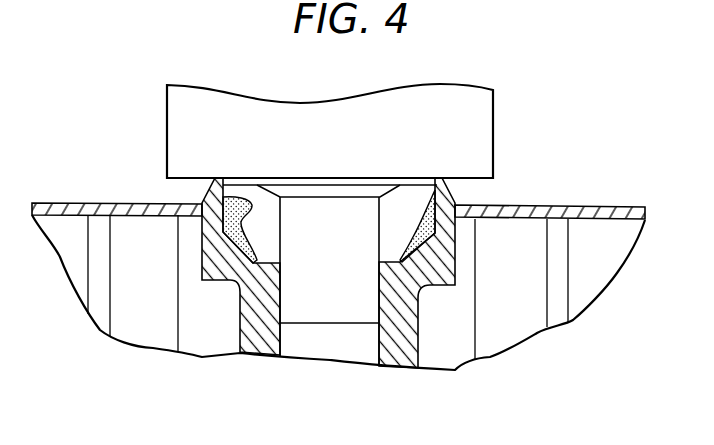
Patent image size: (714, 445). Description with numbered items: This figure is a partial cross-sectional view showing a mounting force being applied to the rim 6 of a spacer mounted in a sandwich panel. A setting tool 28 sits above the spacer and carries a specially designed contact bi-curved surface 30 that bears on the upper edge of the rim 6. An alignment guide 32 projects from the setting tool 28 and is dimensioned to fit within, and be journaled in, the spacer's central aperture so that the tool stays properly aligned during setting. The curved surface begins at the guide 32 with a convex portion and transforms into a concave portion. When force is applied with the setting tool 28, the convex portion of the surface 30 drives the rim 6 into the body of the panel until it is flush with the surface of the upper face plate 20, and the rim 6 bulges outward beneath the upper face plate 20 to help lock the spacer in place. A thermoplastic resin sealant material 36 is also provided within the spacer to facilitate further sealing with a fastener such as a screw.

The rim 6 is at (202, 260).
The upper face plate 20 is at (603, 207).
The setting tool 28 is at (506, 131).
The contact bi-curved surface 30 is at (434, 179).
The alignment guide 32 is at (313, 303).
The thermoplastic resin sealant material 36 is at (242, 203).